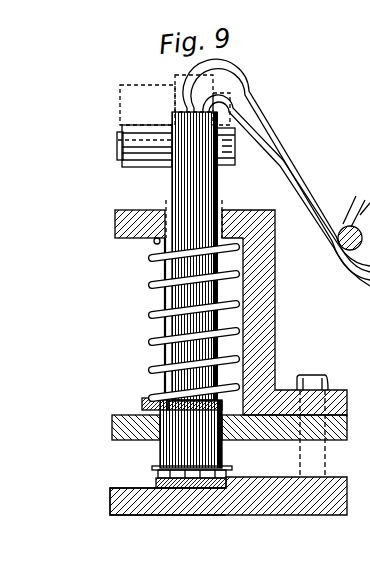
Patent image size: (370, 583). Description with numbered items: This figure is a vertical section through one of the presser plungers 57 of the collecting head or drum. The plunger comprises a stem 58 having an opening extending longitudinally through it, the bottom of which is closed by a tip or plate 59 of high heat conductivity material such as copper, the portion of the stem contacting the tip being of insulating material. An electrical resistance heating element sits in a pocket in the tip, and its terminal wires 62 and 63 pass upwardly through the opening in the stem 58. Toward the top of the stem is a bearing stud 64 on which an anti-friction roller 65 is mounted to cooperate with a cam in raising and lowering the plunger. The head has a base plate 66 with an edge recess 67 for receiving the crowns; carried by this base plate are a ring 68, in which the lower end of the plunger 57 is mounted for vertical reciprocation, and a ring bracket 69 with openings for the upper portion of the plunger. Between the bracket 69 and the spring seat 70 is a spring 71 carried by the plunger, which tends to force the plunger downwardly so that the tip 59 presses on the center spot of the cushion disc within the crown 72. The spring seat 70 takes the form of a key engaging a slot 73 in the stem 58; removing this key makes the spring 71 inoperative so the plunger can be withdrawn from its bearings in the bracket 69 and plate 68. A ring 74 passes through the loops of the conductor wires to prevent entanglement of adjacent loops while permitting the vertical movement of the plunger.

The plunger 57 is at (227, 289).
The stem 58 is at (232, 317).
The tip or plate 59 is at (220, 468).
The terminal wire 62 is at (280, 130).
The terminal wire 63 is at (288, 160).
The bearing stud 64 is at (235, 148).
The anti-friction roller 65 is at (150, 140).
The base plate 66 is at (270, 500).
The edge recess 67 is at (152, 491).
The ring 68 is at (113, 421).
The ring bracket 69 is at (118, 237).
The spring seat 70 is at (164, 401).
The spring 71 is at (158, 316).
The crown 72 is at (215, 491).
The slot 73 is at (262, 381).
The ring 74 is at (338, 258).